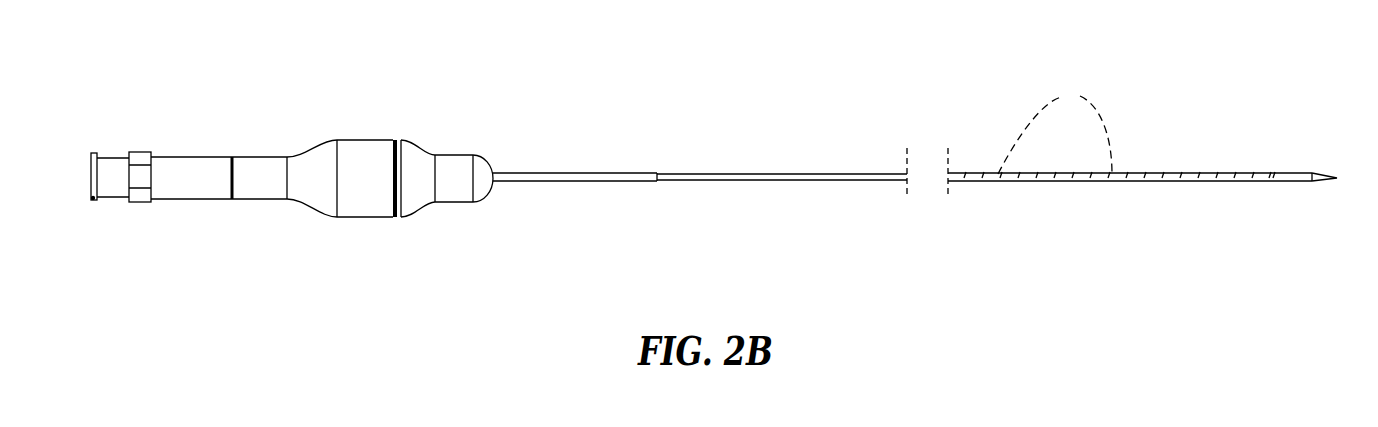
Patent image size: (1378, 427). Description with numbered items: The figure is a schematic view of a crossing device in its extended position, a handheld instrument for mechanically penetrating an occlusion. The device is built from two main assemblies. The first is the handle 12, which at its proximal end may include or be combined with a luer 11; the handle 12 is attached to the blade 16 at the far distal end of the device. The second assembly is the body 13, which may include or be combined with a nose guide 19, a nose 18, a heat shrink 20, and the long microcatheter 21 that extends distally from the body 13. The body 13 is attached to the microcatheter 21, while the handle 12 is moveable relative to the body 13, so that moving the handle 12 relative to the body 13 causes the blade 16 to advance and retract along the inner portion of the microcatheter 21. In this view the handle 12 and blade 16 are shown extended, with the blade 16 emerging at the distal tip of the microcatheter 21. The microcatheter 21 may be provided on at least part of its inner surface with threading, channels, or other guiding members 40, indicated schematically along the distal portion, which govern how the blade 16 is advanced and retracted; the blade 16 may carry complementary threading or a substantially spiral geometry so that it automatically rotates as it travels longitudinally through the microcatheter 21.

The luer 11 is at (123, 148).
The handle 12 is at (201, 147).
The body 13 is at (325, 132).
The nose guide 19 is at (426, 138).
The nose 18 is at (493, 147).
The heat shrink 20 is at (600, 160).
The microcatheter 21 is at (771, 165).
The guiding members 40 is at (1055, 126).
The blade 16 is at (1322, 195).